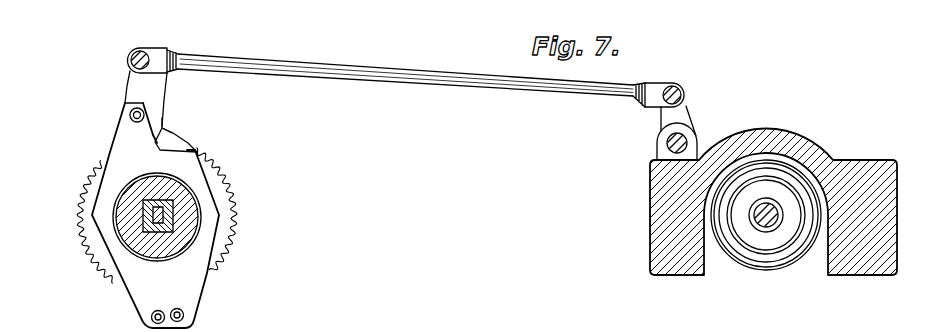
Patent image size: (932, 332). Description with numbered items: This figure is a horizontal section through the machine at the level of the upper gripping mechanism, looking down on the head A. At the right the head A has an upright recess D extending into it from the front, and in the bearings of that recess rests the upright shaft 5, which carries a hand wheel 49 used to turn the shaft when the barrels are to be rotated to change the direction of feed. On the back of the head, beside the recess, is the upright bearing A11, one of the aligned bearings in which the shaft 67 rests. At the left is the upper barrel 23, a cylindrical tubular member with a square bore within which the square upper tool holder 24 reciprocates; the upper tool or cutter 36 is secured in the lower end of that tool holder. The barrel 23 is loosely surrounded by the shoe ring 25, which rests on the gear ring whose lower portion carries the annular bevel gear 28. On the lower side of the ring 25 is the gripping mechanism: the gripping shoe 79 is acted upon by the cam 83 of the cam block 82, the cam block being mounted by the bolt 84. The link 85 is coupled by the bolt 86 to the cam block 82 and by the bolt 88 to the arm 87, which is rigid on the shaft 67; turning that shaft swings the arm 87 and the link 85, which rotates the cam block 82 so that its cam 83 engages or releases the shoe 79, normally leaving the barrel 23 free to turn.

The head A is at (717, 201).
The upright recess D is at (763, 165).
The hand wheel 49 is at (771, 262).
The upright shaft 5 is at (771, 205).
The upright bearing A11 is at (657, 144).
The shaft 67 is at (690, 137).
The arm 87 is at (667, 121).
The bolt 88 is at (681, 90).
The link 85 is at (405, 85).
The bolt 86 is at (136, 53).
The cam block 82 is at (140, 80).
The bolt 84 is at (133, 112).
The cam 83 is at (166, 130).
The gripping shoe 79 is at (173, 141).
The ring 25 is at (122, 138).
The annular bevel gear 28 is at (230, 237).
The upper tool holder 24 is at (171, 206).
The barrel 23 is at (188, 214).
The upper tool or cutter 36 is at (150, 215).